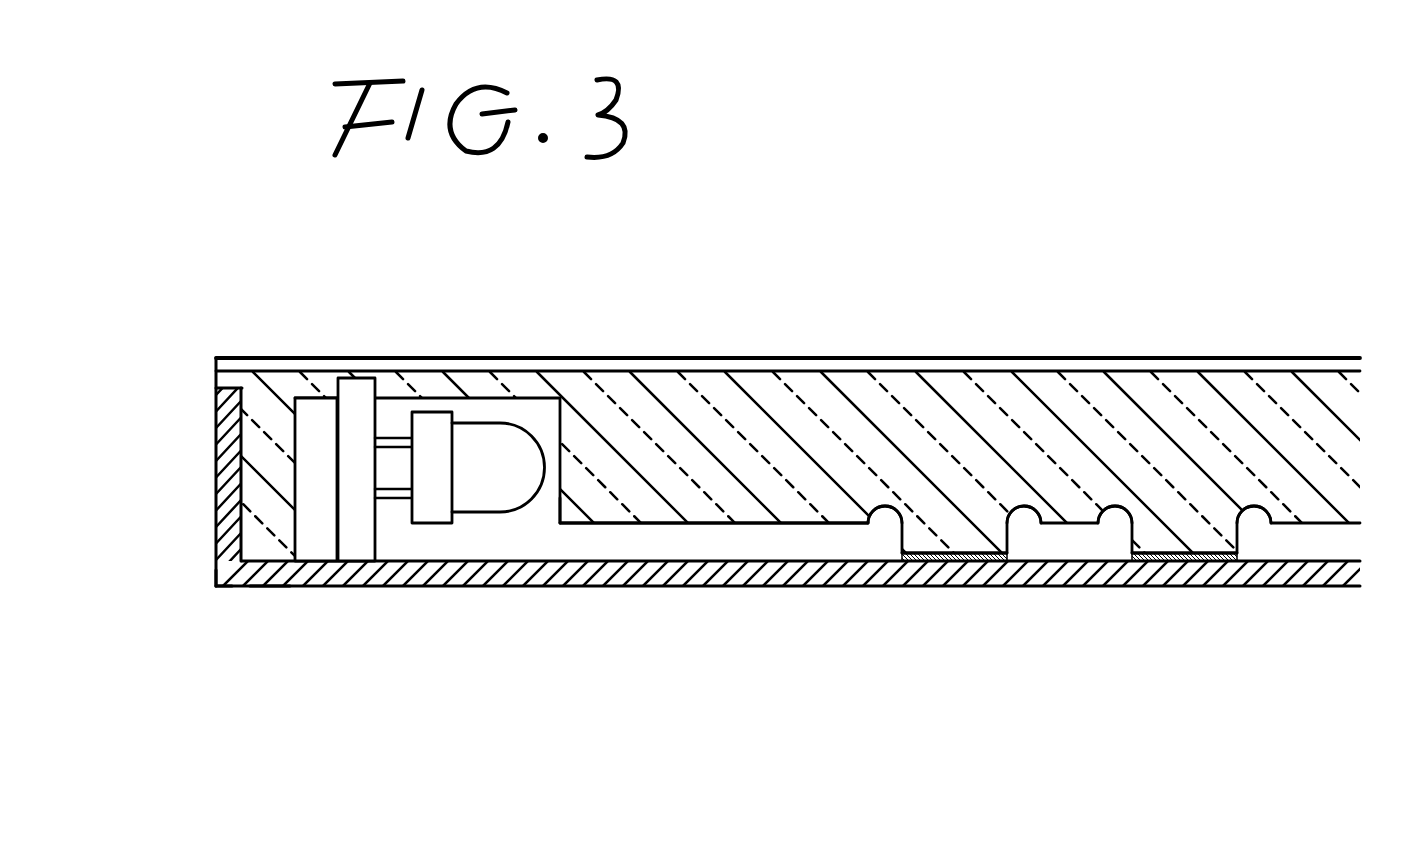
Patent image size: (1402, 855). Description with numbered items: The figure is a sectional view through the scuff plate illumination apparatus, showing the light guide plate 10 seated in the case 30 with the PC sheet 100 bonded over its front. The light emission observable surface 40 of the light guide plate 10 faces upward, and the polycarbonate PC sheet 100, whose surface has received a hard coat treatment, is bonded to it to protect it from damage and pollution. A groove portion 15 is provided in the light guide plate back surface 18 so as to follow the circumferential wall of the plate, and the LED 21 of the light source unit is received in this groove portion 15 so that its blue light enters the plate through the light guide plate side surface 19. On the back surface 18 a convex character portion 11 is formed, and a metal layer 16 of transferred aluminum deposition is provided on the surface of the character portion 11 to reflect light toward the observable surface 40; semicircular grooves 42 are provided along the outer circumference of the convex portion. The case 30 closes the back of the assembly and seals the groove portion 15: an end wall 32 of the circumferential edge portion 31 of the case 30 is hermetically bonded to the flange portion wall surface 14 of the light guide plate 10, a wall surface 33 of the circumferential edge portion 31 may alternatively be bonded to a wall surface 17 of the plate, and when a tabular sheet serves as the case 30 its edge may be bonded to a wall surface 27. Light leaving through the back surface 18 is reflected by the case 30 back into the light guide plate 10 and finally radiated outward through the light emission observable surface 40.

The light guide plate 10 is at (858, 412).
The character portion 11 is at (923, 533).
The flange portion wall surface 14 is at (245, 465).
The groove portion 15 is at (505, 410).
The metal layer 16 is at (958, 553).
The wall surface 17 is at (215, 550).
The light guide plate back surface 18 is at (668, 523).
The light guide plate side surface 19 is at (555, 500).
The LED 21 is at (515, 452).
The wall surface 27 is at (270, 586).
The case 30 is at (453, 587).
The circumferential edge portion 31 is at (216, 456).
The end wall 32 is at (230, 393).
The wall surface 33 is at (240, 398).
The light emission observable surface 40 is at (762, 375).
The semicircular groove 42 is at (910, 515).
The PC sheet 100 is at (667, 360).